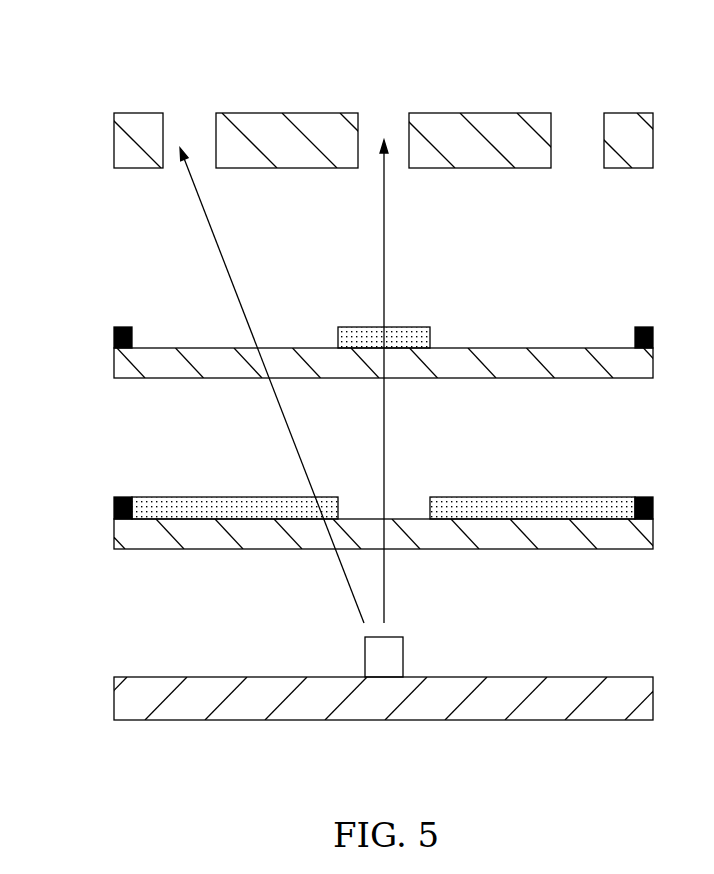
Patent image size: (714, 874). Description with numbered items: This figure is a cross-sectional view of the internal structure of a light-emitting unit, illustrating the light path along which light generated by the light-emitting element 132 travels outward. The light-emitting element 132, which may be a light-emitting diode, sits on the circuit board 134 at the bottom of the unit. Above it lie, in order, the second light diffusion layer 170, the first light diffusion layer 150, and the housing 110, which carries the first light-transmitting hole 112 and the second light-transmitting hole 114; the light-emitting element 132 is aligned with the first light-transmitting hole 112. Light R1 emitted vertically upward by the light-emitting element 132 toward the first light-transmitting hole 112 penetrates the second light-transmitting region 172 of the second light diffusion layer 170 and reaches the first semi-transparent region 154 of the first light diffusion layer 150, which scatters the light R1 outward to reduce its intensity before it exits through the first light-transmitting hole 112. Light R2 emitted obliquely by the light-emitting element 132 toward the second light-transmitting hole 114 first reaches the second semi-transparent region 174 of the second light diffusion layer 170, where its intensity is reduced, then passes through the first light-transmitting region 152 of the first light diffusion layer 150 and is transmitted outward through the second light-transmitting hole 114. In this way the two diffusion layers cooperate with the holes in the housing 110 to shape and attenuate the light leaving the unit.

The housing 110 is at (114, 147).
The first light-transmitting hole 112 is at (382, 111).
The second light-transmitting hole 114 is at (192, 111).
The first light diffusion layer 150 is at (114, 361).
The first light-transmitting region 152 is at (175, 313).
The first semi-transparent region 154 is at (356, 313).
The second light diffusion layer 170 is at (114, 524).
The second light-transmitting region 172 is at (362, 485).
The second semi-transparent region 174 is at (217, 485).
The light-emitting element 132 is at (403, 648).
The circuit board 134 is at (114, 702).
The light R1 is at (384, 440).
The light R2 is at (351, 590).